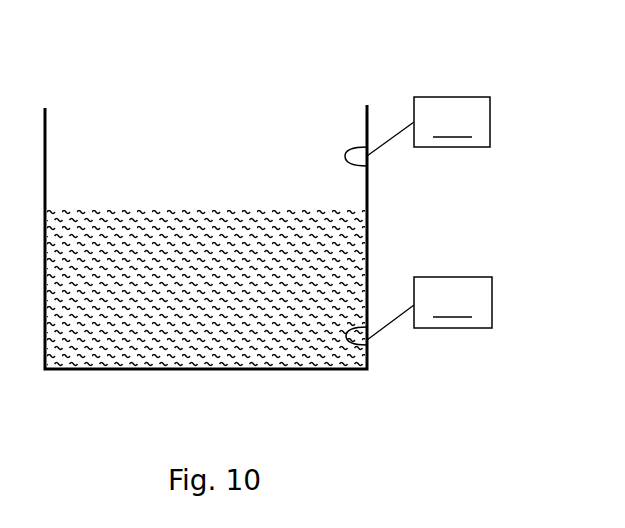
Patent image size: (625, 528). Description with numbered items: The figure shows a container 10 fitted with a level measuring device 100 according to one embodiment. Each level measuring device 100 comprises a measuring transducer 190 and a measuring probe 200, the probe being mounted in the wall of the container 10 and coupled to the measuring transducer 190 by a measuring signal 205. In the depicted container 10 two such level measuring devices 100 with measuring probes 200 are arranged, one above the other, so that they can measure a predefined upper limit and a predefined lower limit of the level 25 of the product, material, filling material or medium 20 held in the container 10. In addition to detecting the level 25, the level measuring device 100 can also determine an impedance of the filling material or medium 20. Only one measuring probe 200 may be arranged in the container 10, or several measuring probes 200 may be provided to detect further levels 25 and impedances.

The level measuring device 100 is at (340, 81).
The container 10 is at (110, 370).
The level 25 is at (98, 208).
The filling material or medium 20 is at (152, 292).
The measuring probe 200 is at (357, 148).
The measuring transducer 190 is at (453, 212).
The measuring signal 205 is at (387, 142).